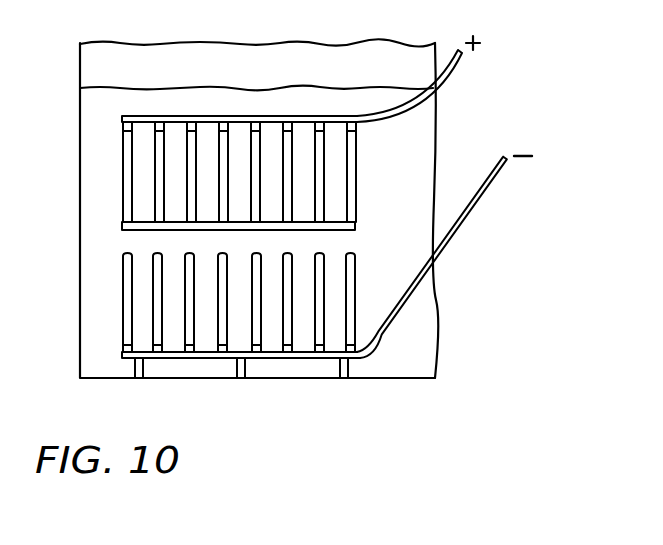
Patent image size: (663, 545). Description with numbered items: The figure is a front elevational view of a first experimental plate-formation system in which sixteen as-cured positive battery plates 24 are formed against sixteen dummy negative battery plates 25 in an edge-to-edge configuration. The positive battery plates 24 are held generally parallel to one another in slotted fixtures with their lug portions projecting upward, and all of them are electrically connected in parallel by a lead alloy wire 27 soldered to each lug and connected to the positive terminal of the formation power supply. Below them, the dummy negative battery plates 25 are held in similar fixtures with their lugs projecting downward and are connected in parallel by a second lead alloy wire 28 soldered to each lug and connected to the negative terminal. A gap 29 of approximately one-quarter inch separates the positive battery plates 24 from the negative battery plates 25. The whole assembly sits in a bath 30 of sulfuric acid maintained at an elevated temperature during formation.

The positive battery plates 24 is at (277, 118).
The dummy negative battery plates 25 is at (357, 280).
The lead alloy wire 27 is at (207, 115).
The lead alloy wire 28 is at (402, 310).
The gap 29 is at (330, 243).
The bath 30 is at (273, 108).